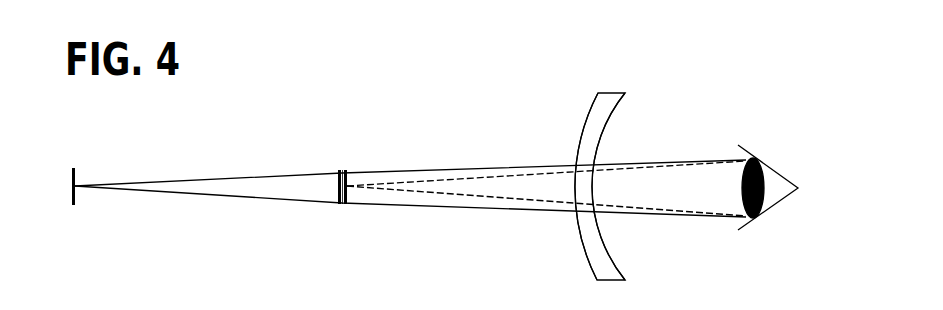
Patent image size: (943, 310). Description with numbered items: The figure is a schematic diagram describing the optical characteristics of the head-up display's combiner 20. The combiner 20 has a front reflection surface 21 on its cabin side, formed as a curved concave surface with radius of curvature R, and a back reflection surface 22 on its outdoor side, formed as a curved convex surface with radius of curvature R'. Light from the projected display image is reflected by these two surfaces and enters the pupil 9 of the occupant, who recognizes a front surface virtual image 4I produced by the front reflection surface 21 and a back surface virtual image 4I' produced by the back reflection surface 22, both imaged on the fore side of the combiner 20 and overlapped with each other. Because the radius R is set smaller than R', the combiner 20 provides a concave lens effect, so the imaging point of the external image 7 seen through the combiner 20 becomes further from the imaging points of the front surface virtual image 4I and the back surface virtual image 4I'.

The external image 7 is at (78, 178).
The front surface virtual image 4I is at (316, 169).
The back surface virtual image 4I' is at (365, 164).
The combiner 20 is at (587, 201).
The back reflection surface 22 is at (574, 187).
The front reflection surface 21 is at (592, 187).
The pupil 9 is at (762, 178).